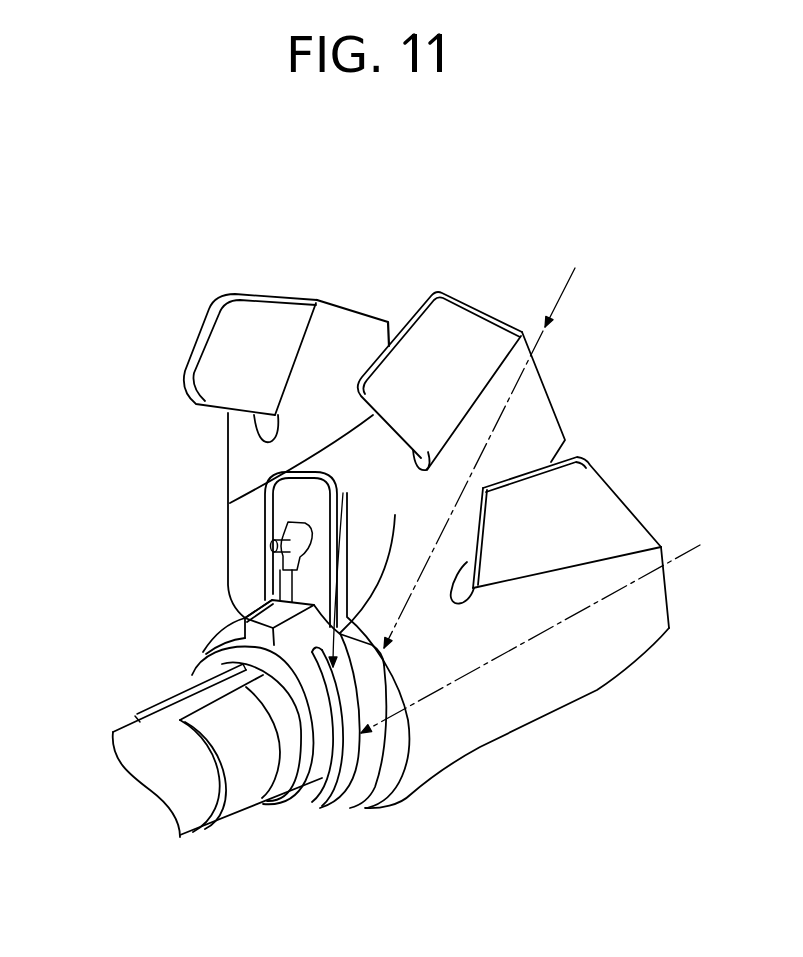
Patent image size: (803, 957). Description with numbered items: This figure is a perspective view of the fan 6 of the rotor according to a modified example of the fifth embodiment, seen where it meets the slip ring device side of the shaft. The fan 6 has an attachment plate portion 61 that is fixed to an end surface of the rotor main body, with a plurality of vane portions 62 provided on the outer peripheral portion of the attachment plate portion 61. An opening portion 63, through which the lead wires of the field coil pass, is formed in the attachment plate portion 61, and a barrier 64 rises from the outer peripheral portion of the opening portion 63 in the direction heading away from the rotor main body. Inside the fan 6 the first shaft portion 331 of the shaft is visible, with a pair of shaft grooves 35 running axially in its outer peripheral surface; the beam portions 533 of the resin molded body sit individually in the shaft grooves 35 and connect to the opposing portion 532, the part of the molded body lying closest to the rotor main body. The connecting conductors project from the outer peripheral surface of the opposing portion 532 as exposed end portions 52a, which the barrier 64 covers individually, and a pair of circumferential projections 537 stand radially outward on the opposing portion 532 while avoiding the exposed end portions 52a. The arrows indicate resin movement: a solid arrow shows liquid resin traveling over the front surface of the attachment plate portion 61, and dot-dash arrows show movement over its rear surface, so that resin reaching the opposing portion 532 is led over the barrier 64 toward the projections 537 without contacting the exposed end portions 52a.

The fan 6 is at (335, 302).
The opening portion 63 is at (302, 498).
The barrier 64 is at (265, 509).
The exposed end portion 52a is at (283, 524).
The projection 537 is at (240, 621).
The opposing portion 532 is at (331, 782).
The shaft groove 35 is at (244, 695).
The first shaft portion 331 is at (188, 792).
The beam portion 533 is at (188, 710).
The vane portion 62 is at (607, 502).
The attachment plate portion 61 is at (525, 693).